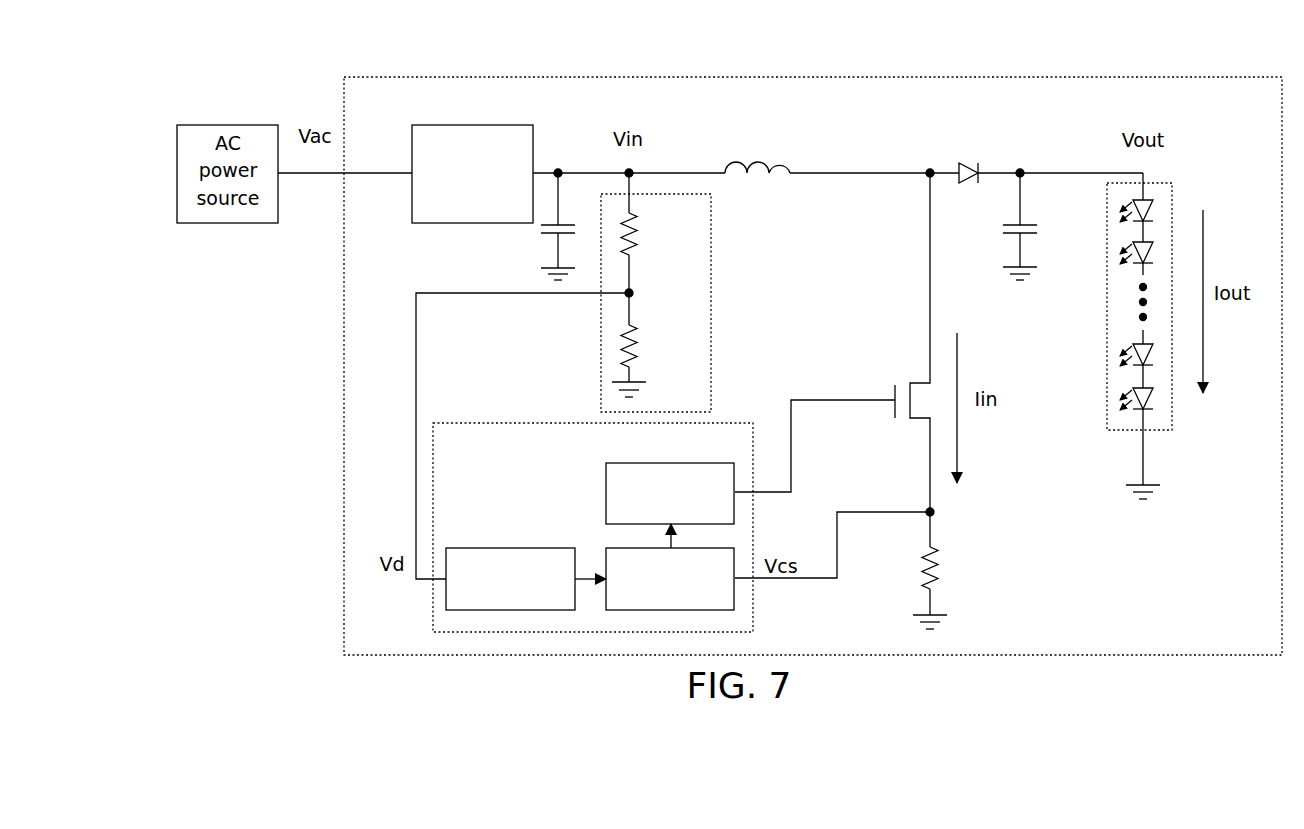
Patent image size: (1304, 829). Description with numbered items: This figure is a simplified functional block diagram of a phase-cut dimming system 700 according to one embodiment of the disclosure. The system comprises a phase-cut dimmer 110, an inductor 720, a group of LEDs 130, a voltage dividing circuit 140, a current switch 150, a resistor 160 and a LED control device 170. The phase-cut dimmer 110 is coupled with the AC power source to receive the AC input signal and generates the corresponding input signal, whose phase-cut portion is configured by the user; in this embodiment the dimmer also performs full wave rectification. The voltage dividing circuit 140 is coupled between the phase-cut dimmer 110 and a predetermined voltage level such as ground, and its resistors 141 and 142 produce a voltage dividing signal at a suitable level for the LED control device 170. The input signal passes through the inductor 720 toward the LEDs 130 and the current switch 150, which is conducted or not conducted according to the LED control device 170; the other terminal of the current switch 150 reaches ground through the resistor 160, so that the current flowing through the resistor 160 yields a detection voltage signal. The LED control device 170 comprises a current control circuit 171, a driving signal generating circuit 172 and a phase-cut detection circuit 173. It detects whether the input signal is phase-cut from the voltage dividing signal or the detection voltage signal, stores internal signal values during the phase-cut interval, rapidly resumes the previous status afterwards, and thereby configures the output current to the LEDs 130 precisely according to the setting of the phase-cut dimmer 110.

The phase-cut dimming system 700 is at (1196, 77).
The phase-cut dimmer 110 is at (473, 223).
The inductor 720 is at (770, 147).
The LEDs 130 is at (1173, 196).
The voltage dividing circuit 140 is at (701, 292).
The resistor 141 is at (654, 233).
The resistor 142 is at (657, 349).
The current switch 150 is at (893, 365).
The resistor 160 is at (960, 571).
The LED control device 170 is at (593, 499).
The current control circuit 171 is at (616, 548).
The driving signal generating circuit 172 is at (698, 463).
The phase-cut detection circuit 173 is at (522, 548).